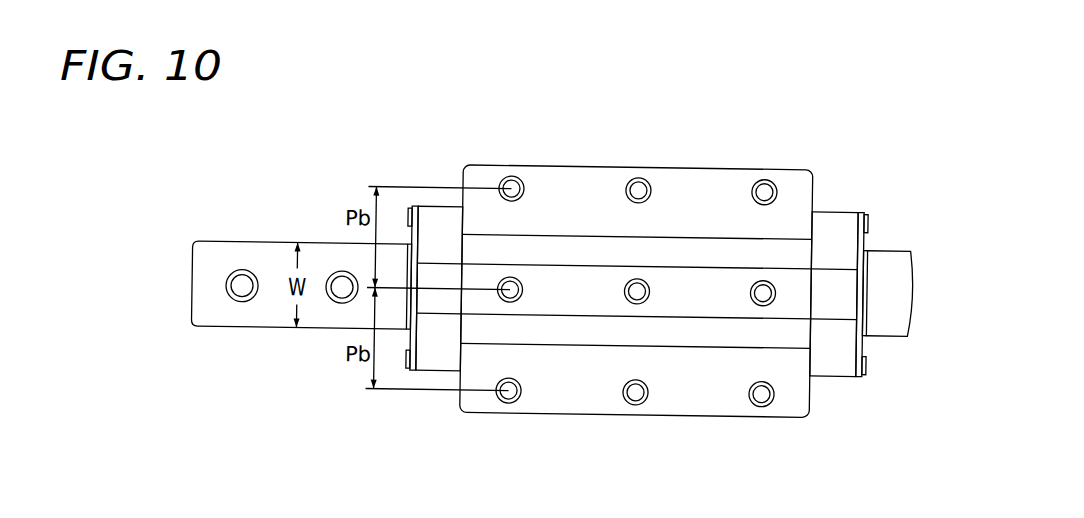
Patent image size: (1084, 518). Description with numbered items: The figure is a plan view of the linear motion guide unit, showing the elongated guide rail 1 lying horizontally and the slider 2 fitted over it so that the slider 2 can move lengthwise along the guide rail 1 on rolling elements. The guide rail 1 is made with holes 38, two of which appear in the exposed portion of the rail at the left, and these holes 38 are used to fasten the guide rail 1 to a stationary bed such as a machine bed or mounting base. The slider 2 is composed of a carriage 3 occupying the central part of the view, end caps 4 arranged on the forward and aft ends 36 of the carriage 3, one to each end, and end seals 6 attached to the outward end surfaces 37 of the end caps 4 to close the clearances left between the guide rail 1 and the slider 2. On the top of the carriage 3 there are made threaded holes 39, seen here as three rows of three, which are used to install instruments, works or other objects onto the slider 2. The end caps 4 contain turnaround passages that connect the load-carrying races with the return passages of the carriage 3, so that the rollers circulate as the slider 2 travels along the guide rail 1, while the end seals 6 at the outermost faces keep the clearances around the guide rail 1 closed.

The guide rail 1 is at (274, 261).
The slider 2 is at (780, 164).
The carriage 3 is at (687, 208).
The end cap 4 is at (431, 232).
The end seal 6 is at (403, 335).
The forward and aft ends of the carriage 36 is at (461, 229).
The outward end surface of the end cap 37 is at (408, 352).
The holes 38 is at (239, 296).
The threaded holes 39 is at (520, 182).